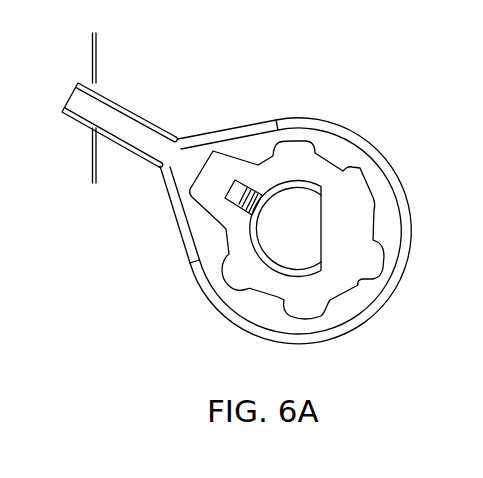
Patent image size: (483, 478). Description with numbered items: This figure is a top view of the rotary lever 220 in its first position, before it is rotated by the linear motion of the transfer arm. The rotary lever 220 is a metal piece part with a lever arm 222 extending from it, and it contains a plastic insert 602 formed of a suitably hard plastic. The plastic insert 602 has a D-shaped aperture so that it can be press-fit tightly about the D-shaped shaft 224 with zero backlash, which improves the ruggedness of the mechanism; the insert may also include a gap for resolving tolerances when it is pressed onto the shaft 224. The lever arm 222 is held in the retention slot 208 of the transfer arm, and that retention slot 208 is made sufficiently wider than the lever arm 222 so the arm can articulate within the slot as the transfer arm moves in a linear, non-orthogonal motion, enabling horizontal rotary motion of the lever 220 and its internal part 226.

The retention slot 208 is at (90, 44).
The rotary lever 220 is at (412, 226).
The lever arm 222 is at (97, 123).
The shaft 224 is at (259, 256).
The cam member 226 is at (350, 203).
The plastic insert 602 is at (235, 180).